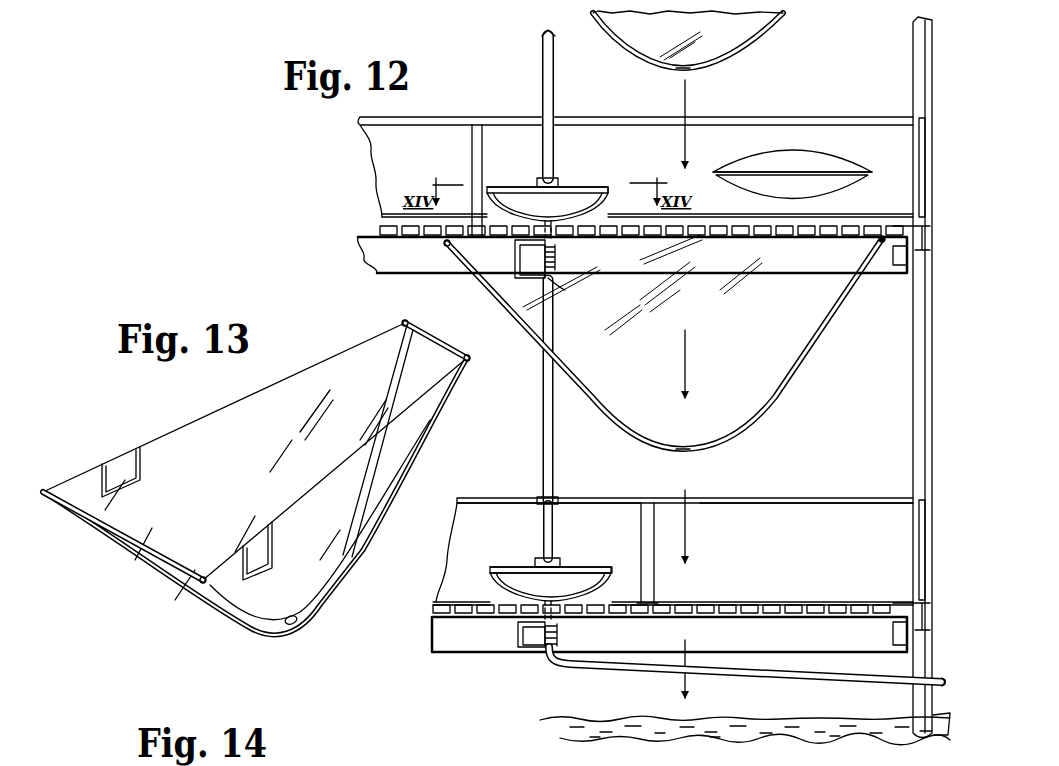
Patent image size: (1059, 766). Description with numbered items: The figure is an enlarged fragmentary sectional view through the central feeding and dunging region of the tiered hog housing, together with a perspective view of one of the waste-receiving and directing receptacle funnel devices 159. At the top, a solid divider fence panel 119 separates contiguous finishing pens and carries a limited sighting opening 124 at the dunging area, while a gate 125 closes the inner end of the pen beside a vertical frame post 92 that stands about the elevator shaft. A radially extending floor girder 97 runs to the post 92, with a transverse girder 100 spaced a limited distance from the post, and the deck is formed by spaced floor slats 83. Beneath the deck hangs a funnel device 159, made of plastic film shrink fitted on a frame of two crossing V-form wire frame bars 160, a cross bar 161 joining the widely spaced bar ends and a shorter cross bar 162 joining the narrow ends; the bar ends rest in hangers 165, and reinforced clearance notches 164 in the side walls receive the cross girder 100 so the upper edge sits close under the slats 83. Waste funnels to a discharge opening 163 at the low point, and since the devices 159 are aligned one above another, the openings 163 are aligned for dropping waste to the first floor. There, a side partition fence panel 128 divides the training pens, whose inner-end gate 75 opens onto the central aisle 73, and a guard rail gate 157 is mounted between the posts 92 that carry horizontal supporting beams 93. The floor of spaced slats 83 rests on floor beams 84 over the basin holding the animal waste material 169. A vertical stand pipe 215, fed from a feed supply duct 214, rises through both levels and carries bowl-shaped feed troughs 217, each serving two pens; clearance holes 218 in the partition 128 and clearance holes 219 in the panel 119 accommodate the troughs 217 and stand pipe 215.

In FIG. 12, the central aisle 73 is at (823, 519).
In FIG. 12, the gate 75 is at (656, 558).
In FIG. 12, the floor slat 83 is at (790, 605).
In FIG. 12, the floor beam 84 is at (466, 650).
In FIG. 12, the vertical frame post 92 is at (913, 366).
In FIG. 12, the horizontal supporting beam 93 is at (910, 624).
In FIG. 12, the horizontal floor girder 97 is at (372, 262).
In FIG. 12, the transverse girder 100 is at (547, 279).
In FIG. 12, the divider fence panel 119 is at (779, 129).
In FIG. 12, the sighting opening 124 is at (722, 184).
In FIG. 12, the gate 125 is at (920, 172).
In FIG. 12, the side partition fence panel 128 is at (587, 520).
In FIG. 12, the guard rail gate 157 is at (918, 553).
In FIG. 12, the waste-receiving and directing receptacle funnel device 159 is at (764, 43).
In FIG. 13, the waste-receiving and directing receptacle funnel device 159 is at (206, 613).
In FIG. 13, the wire frame bar 160 is at (410, 460).
In FIG. 13, the cross bar 161 is at (126, 549).
In FIG. 13, the shorter cross bar 162 is at (441, 348).
In FIG. 12, the discharge opening 163 is at (693, 68).
In FIG. 13, the discharge opening 163 is at (306, 622).
In FIG. 12, the clearance notch 164 is at (599, 267).
In FIG. 13, the clearance notch 164 is at (118, 472).
In FIG. 12, the hanger 165 is at (446, 247).
In FIG. 12, the animal waste material 169 is at (622, 713).
In FIG. 12, the feed supply duct 214 is at (796, 679).
In FIG. 12, the stand pipe 215 is at (542, 420).
In FIG. 12, the feed trough 217 is at (513, 193).
In FIG. 12, the clearance hole 218 is at (598, 578).
In FIG. 12, the clearance hole 219 is at (588, 188).